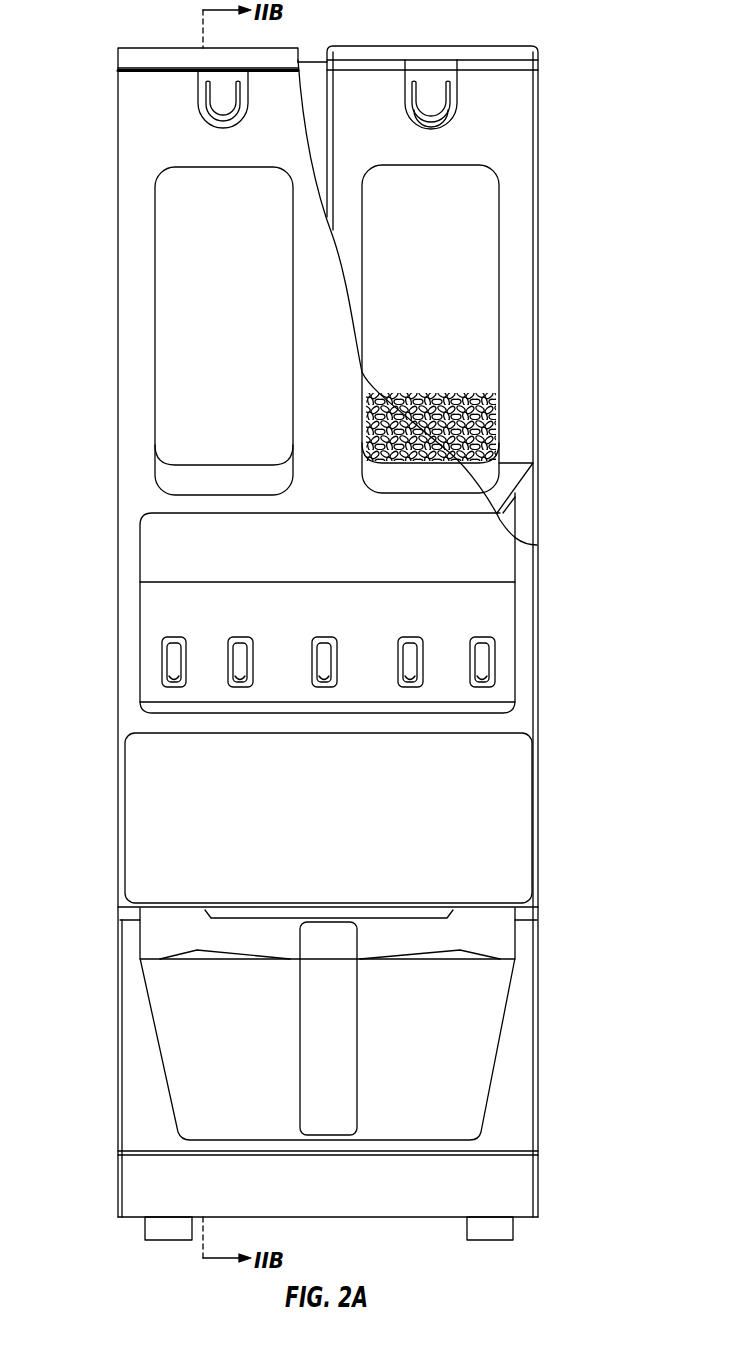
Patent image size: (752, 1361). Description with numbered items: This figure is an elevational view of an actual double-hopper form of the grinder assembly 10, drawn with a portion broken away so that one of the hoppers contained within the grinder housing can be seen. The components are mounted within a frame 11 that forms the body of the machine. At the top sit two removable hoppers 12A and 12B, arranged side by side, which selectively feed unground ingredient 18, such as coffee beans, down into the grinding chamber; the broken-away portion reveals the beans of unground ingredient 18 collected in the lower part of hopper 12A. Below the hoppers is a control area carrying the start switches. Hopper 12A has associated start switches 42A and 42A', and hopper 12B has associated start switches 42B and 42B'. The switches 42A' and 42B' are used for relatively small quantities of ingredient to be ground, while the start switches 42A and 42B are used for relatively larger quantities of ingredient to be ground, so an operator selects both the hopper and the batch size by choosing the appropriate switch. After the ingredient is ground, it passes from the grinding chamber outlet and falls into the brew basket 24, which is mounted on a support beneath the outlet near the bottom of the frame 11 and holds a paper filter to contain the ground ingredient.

The grinder assembly 10 is at (542, 180).
The frame 11 is at (515, 582).
The removable hopper 12A is at (513, 268).
The removable hopper 12B is at (167, 241).
The unground ingredient 18 is at (497, 441).
The brew basket 24 is at (490, 987).
The start switch 42A is at (537, 651).
The start switch 42A' is at (506, 697).
The start switch 42B is at (157, 696).
The start switch 42B' is at (119, 651).